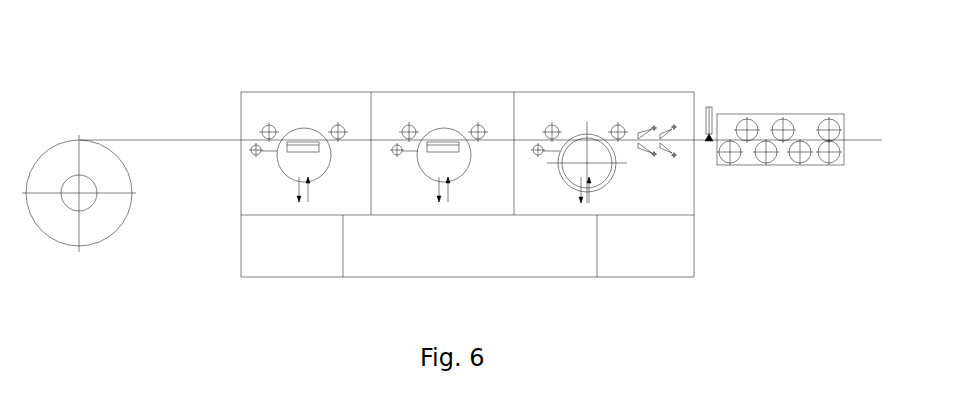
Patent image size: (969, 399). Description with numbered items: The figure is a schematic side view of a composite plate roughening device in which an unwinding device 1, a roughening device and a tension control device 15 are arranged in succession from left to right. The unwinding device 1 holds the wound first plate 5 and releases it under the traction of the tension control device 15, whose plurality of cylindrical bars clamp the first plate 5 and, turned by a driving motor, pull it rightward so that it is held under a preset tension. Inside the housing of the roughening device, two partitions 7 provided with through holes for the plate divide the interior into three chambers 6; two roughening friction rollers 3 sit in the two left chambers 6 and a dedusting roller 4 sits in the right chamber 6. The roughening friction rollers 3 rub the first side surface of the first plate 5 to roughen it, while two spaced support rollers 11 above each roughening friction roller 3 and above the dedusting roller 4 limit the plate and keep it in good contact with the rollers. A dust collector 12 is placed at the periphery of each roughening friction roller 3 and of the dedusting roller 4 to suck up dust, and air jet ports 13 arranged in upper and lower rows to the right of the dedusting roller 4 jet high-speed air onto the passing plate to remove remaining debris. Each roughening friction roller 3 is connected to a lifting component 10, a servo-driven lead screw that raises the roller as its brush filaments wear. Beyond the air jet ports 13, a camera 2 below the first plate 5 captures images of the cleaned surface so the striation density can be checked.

The unwinding device 1 is at (82, 136).
The camera 2 is at (761, 183).
The roughening friction roller 3 is at (385, 101).
The dedusting roller 4 is at (590, 112).
The first plate 5 is at (481, 80).
The chamber 6 is at (502, 202).
The partition 7 is at (466, 118).
The lifting component 10 is at (500, 246).
The support roller 11 is at (468, 81).
The dust collector 12 is at (442, 231).
The air jet port 13 is at (685, 89).
The tension control device 15 is at (780, 93).